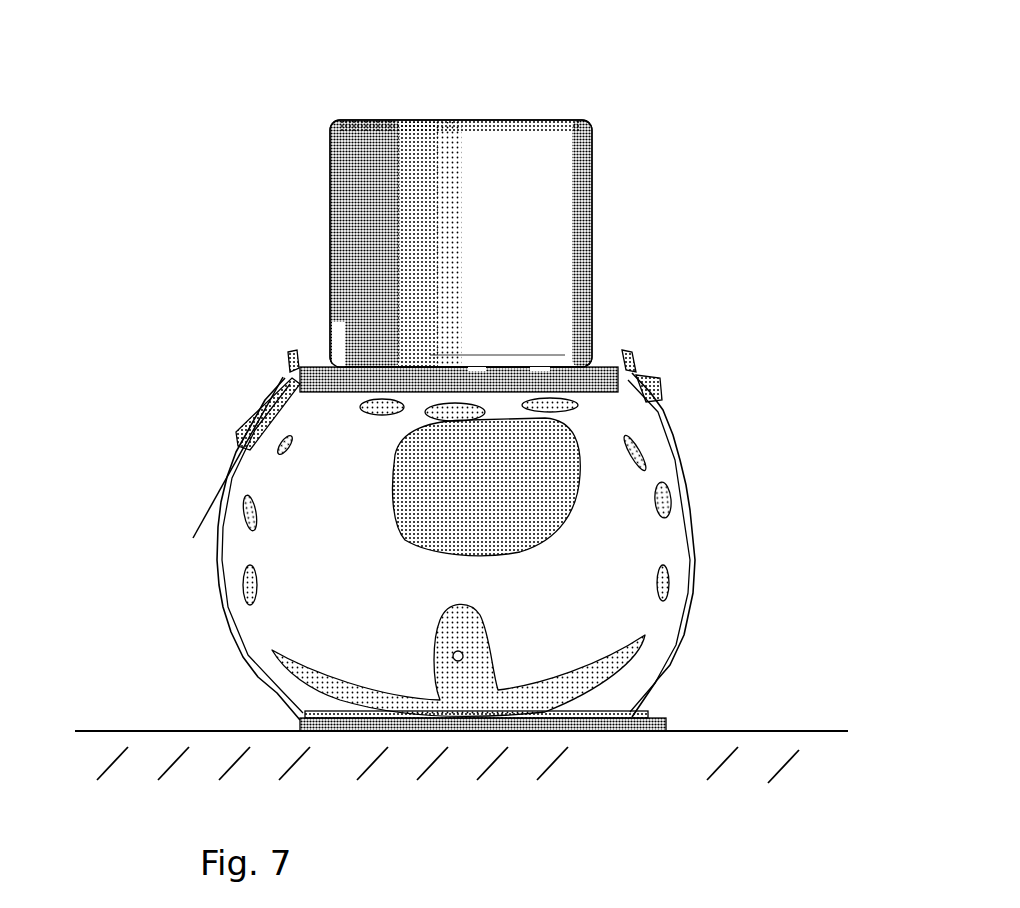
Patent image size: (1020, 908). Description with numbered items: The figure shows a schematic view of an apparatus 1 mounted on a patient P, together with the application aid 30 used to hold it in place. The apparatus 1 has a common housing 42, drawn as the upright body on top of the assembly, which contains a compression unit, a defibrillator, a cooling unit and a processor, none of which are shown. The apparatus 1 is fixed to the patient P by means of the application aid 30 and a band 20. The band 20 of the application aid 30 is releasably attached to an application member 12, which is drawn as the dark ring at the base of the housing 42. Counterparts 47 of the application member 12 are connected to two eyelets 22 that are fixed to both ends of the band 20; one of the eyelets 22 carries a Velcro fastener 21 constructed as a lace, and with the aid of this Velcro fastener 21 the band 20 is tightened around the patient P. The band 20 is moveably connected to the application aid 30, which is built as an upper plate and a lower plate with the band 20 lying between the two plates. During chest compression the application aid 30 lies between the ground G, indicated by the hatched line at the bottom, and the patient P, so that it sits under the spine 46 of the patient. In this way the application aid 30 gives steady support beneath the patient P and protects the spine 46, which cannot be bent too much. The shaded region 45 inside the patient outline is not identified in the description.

The apparatus 1 is at (276, 123).
The application member 12 is at (298, 370).
The band 20 is at (222, 612).
The Velcro fastener 21 is at (208, 508).
The eyelets 22 is at (270, 388).
The application aid 30 is at (552, 733).
The common housing 42 is at (596, 202).
The plant body 45 is at (565, 483).
The spine 46 is at (465, 658).
The counterparts 47 is at (290, 360).
The patient P is at (568, 588).
The ground G is at (461, 758).